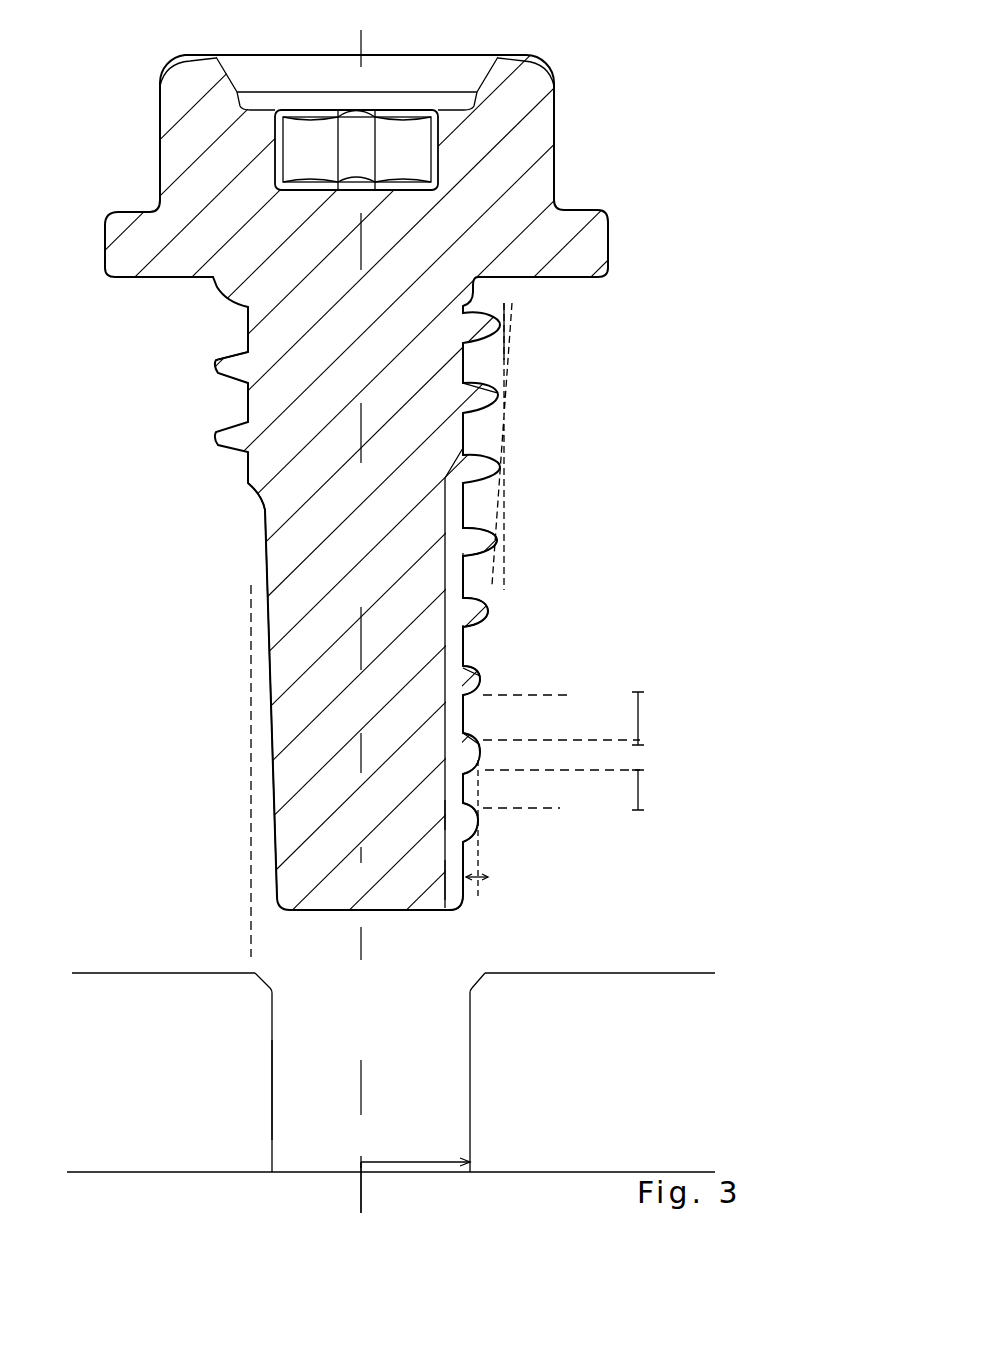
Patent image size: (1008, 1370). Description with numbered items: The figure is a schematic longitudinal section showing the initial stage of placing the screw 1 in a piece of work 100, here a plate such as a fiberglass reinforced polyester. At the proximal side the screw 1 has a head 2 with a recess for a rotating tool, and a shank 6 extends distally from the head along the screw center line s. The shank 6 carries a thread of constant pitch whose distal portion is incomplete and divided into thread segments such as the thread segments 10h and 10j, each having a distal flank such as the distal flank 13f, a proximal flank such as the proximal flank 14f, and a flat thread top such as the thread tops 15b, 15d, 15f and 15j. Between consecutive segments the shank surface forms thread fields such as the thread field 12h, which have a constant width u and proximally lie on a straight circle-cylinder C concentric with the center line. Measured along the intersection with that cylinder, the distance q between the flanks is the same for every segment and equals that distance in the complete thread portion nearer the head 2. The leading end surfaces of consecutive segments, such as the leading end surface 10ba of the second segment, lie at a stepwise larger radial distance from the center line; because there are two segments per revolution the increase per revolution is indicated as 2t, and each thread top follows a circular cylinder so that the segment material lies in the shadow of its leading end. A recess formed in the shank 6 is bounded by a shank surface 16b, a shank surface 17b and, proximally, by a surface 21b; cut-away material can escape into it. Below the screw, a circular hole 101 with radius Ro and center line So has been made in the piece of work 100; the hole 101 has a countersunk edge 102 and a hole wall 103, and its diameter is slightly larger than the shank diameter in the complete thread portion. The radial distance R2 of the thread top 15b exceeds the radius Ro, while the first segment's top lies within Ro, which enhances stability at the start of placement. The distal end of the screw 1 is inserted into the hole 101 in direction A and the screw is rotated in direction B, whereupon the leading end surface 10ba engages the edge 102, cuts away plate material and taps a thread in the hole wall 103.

The screw 1 is at (190, 487).
The head 2 is at (540, 172).
The screw center line s is at (248, 349).
The distance between flanks q is at (248, 372).
The surface bounding recess 21b is at (258, 497).
The thread segment 10j is at (493, 533).
The thread top 15j is at (482, 547).
The shank 6 is at (290, 618).
The thread segment 10h is at (483, 603).
The thread field 12h is at (481, 653).
The proximal flank 14f is at (483, 680).
The thread top 15f is at (478, 685).
The distal flank 13f is at (478, 700).
The width of thread fields u is at (578, 750).
The thread top 15d is at (480, 753).
The shank surface 16b is at (443, 815).
The leading end surface 10ba is at (463, 823).
The thread top 15b is at (470, 830).
The shank surface 17b is at (447, 868).
The stepwise increase of radial distance per revolution 2t is at (477, 883).
The straight circle-cylinder C is at (252, 945).
The radial distance of second thread top R2 is at (434, 919).
The piece of work 100 is at (640, 1010).
The hole 101 is at (368, 1053).
The countersunk edge 102 is at (483, 975).
The hole wall 103 is at (270, 1090).
The insertion direction A is at (405, 1050).
The rotation direction B is at (348, 1100).
The center line of hole So is at (368, 1212).
The hole radius Ro is at (467, 1163).